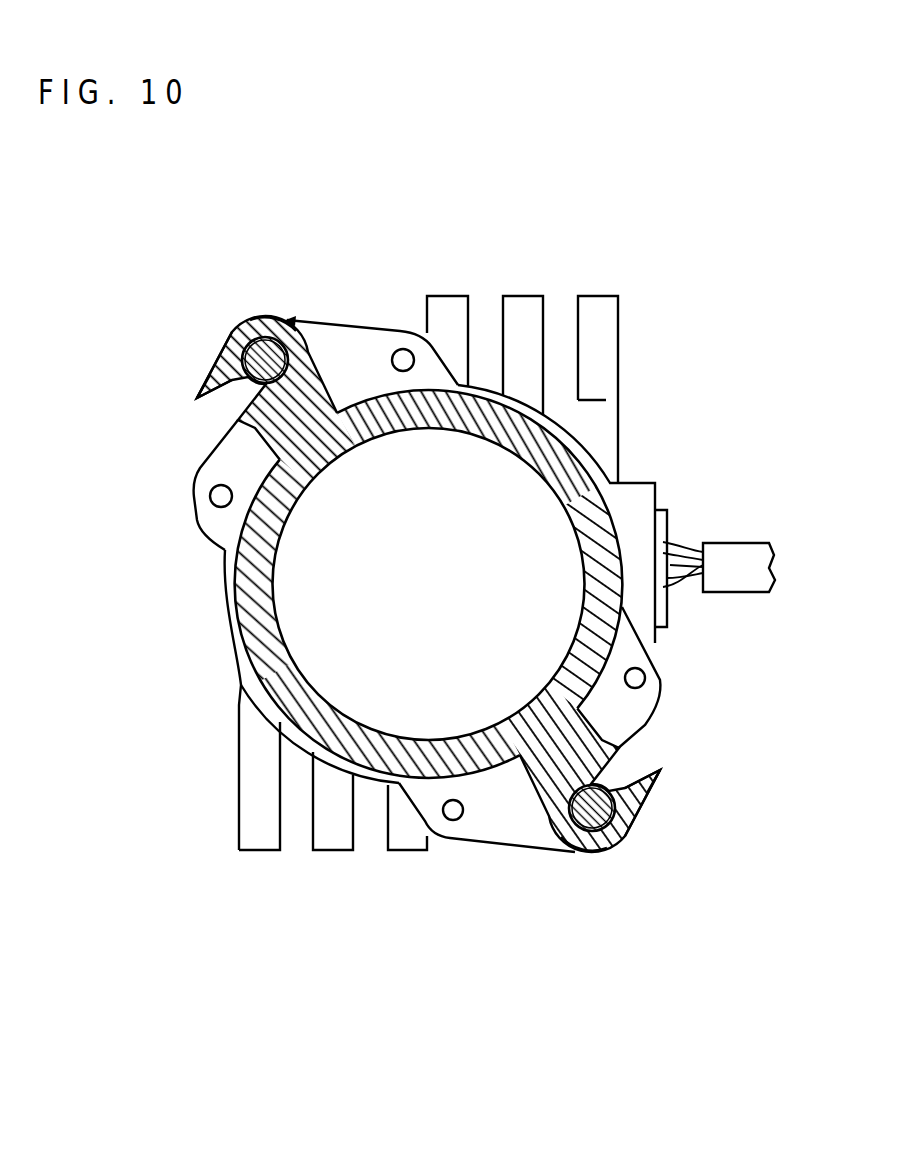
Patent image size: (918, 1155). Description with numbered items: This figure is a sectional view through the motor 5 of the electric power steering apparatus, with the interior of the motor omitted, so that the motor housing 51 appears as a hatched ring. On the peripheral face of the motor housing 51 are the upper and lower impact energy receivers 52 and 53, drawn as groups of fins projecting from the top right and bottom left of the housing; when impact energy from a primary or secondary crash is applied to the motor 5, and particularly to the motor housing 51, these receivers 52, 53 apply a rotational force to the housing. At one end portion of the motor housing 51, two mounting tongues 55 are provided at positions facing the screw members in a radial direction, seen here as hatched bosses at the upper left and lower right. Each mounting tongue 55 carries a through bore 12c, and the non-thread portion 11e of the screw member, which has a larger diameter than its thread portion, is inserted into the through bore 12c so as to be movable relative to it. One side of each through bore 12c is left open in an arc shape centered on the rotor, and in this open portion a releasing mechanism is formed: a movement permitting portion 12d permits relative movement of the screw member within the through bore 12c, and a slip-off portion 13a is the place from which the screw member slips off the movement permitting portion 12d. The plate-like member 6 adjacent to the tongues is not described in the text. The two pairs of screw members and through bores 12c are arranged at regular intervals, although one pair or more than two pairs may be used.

The motor 5 is at (635, 478).
The motor housing 51 is at (557, 432).
The upper impact energy receiver 52 is at (600, 296).
The lower impact energy receiver 53 is at (407, 850).
The mounting tongue 55 is at (240, 319).
The through bore 12c is at (262, 345).
The non-thread portion 11e is at (277, 320).
The bracket 6 is at (292, 318).
The movement permitting portion 12d is at (213, 370).
The slip-off portion 13a is at (205, 401).